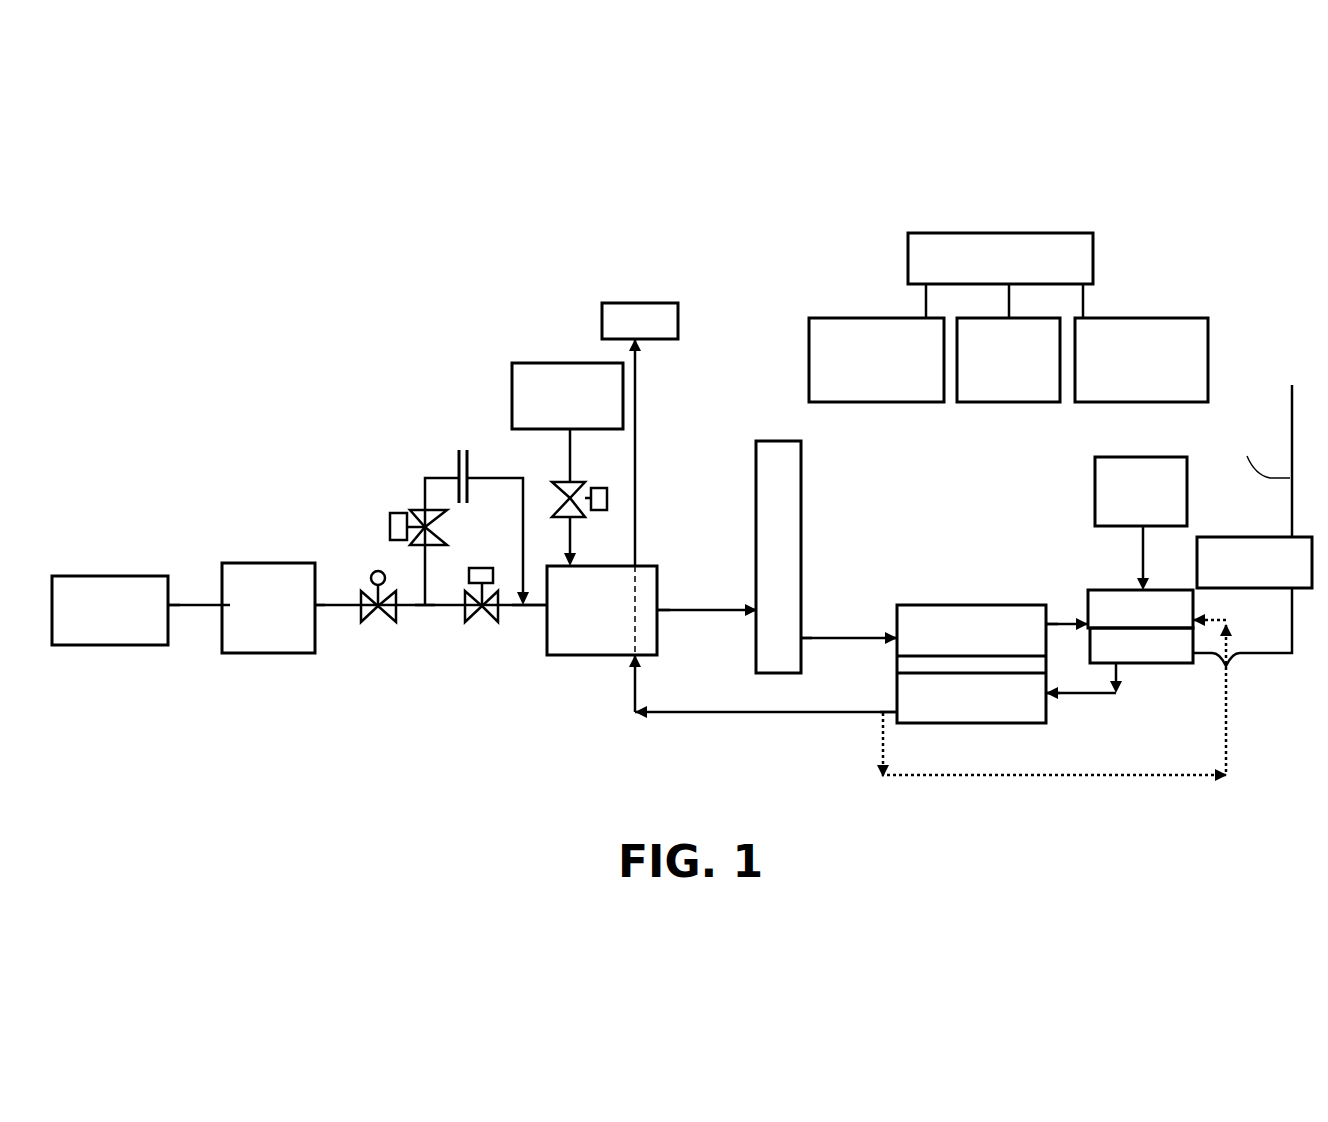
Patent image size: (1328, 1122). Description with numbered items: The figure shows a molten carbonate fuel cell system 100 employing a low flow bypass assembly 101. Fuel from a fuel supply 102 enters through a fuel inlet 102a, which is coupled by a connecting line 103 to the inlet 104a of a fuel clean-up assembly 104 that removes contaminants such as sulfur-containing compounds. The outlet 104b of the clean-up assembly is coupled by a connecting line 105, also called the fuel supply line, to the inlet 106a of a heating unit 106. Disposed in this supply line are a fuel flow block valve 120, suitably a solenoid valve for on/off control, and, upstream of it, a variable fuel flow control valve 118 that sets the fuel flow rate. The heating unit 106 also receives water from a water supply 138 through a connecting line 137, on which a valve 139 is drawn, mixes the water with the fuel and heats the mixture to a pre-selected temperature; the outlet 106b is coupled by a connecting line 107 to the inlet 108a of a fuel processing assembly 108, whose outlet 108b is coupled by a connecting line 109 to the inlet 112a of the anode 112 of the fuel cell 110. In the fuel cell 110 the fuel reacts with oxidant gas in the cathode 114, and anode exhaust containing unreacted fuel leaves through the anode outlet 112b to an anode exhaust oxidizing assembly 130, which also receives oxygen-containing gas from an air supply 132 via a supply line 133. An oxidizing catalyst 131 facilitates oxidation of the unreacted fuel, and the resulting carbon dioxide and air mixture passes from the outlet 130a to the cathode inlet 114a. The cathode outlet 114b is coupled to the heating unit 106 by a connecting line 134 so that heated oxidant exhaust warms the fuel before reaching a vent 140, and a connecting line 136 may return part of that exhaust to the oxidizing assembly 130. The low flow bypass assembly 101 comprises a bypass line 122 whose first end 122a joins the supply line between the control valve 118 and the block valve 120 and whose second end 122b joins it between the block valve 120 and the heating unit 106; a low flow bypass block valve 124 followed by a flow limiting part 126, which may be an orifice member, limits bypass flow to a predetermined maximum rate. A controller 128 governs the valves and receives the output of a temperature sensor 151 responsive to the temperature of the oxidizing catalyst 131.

The fuel cell system 100 is at (772, 330).
The low flow bypass assembly 101 is at (388, 420).
The fuel supply 102 is at (100, 576).
The fuel inlet 102a is at (172, 612).
The connecting line 103 is at (192, 598).
The fuel clean-up assembly 104 is at (278, 563).
The inlet of the fuel clean-up assembly 104a is at (222, 615).
The outlet of the fuel clean-up assembly 104b is at (316, 612).
The connecting line 105 is at (440, 610).
The heating unit 106 is at (567, 655).
The inlet of the heating unit 106a is at (545, 612).
The outlet of the heating unit 106b is at (660, 618).
The connecting line 107 is at (680, 605).
The fuel processing assembly 108 is at (786, 441).
The inlet of the fuel processing assembly 108a is at (748, 605).
The outlet of the fuel processing assembly 108b is at (805, 640).
The connecting line 109 is at (842, 636).
The fuel cell 110 is at (938, 556).
The anode 112 is at (958, 612).
The anode inlet 112a is at (894, 632).
The anode outlet 112b is at (1052, 624).
The cathode 114 is at (948, 713).
The inlet of the cathode 114a is at (1048, 698).
The outlet of the cathode 114b is at (880, 710).
The variable fuel flow control valve 118 is at (370, 590).
The fuel flow block valve 120 is at (478, 620).
The bypass line 122 is at (425, 478).
The first end of the bypass line 122a is at (418, 610).
The second end of the bypass line 122b is at (520, 610).
The low flow bypass block valve 124 is at (405, 513).
The flow limiting part 126 is at (458, 457).
The controller 128 is at (1076, 262).
The anode exhaust oxidizing assembly 130 is at (1118, 590).
The outlet of the oxidizing assembly 130a is at (1120, 668).
The oxidizing catalyst 131 is at (1145, 663).
The air supply 132 is at (1095, 485).
The supply line 133 is at (1146, 565).
The connecting line 134 is at (635, 437).
The connecting line 136 is at (995, 778).
The connecting line 137 is at (568, 458).
The water supply 138 is at (512, 381).
The water valve 139 is at (607, 500).
The vent 140 is at (668, 312).
The temperature sensor 151 is at (1278, 537).